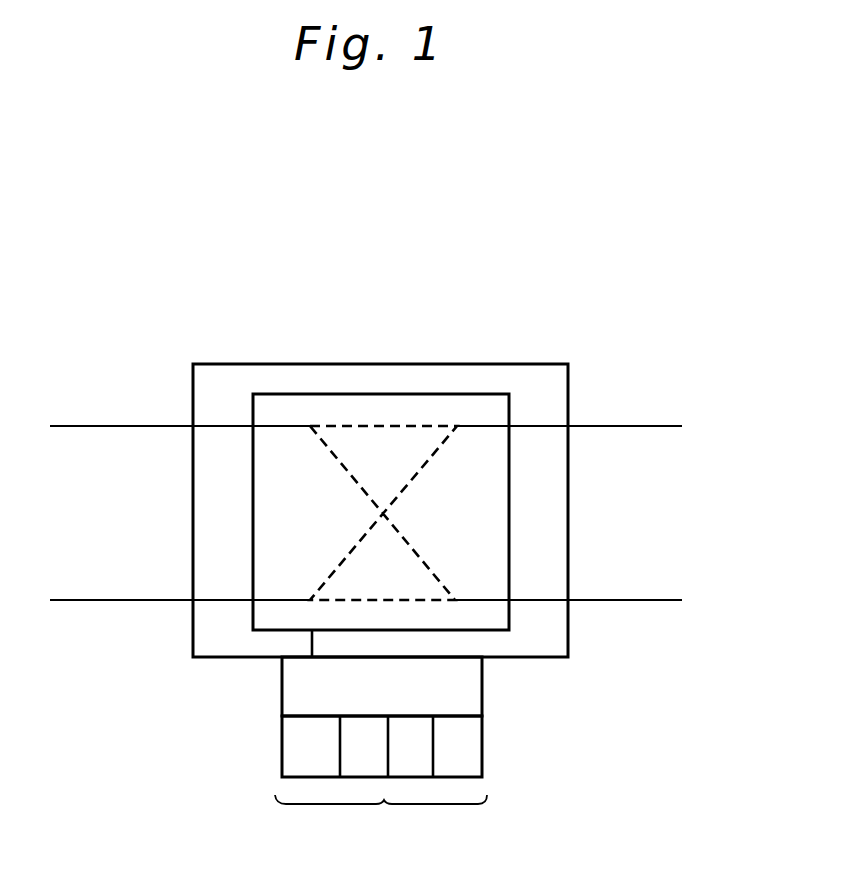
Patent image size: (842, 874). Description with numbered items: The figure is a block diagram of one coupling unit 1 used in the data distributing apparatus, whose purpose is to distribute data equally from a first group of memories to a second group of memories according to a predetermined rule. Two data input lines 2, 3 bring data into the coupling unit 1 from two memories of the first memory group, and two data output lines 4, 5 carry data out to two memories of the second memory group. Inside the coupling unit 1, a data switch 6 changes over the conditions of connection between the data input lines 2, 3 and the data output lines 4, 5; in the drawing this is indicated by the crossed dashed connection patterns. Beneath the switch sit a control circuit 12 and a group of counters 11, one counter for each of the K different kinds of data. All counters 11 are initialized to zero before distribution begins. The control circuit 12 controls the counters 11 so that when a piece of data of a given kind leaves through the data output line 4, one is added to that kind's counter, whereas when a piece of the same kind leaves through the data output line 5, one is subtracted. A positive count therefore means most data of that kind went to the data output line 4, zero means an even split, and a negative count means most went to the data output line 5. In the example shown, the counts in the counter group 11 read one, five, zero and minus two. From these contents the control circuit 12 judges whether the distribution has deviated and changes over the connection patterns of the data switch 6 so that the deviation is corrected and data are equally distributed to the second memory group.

The coupling unit 1 is at (383, 365).
The data input line 2 is at (81, 426).
The data input line 3 is at (76, 600).
The data output line 4 is at (650, 426).
The data output line 5 is at (650, 600).
The data switch 6 is at (497, 394).
The group of counters 11 is at (482, 757).
The control circuit 12 is at (482, 690).
The number of kinds of data K is at (381, 818).